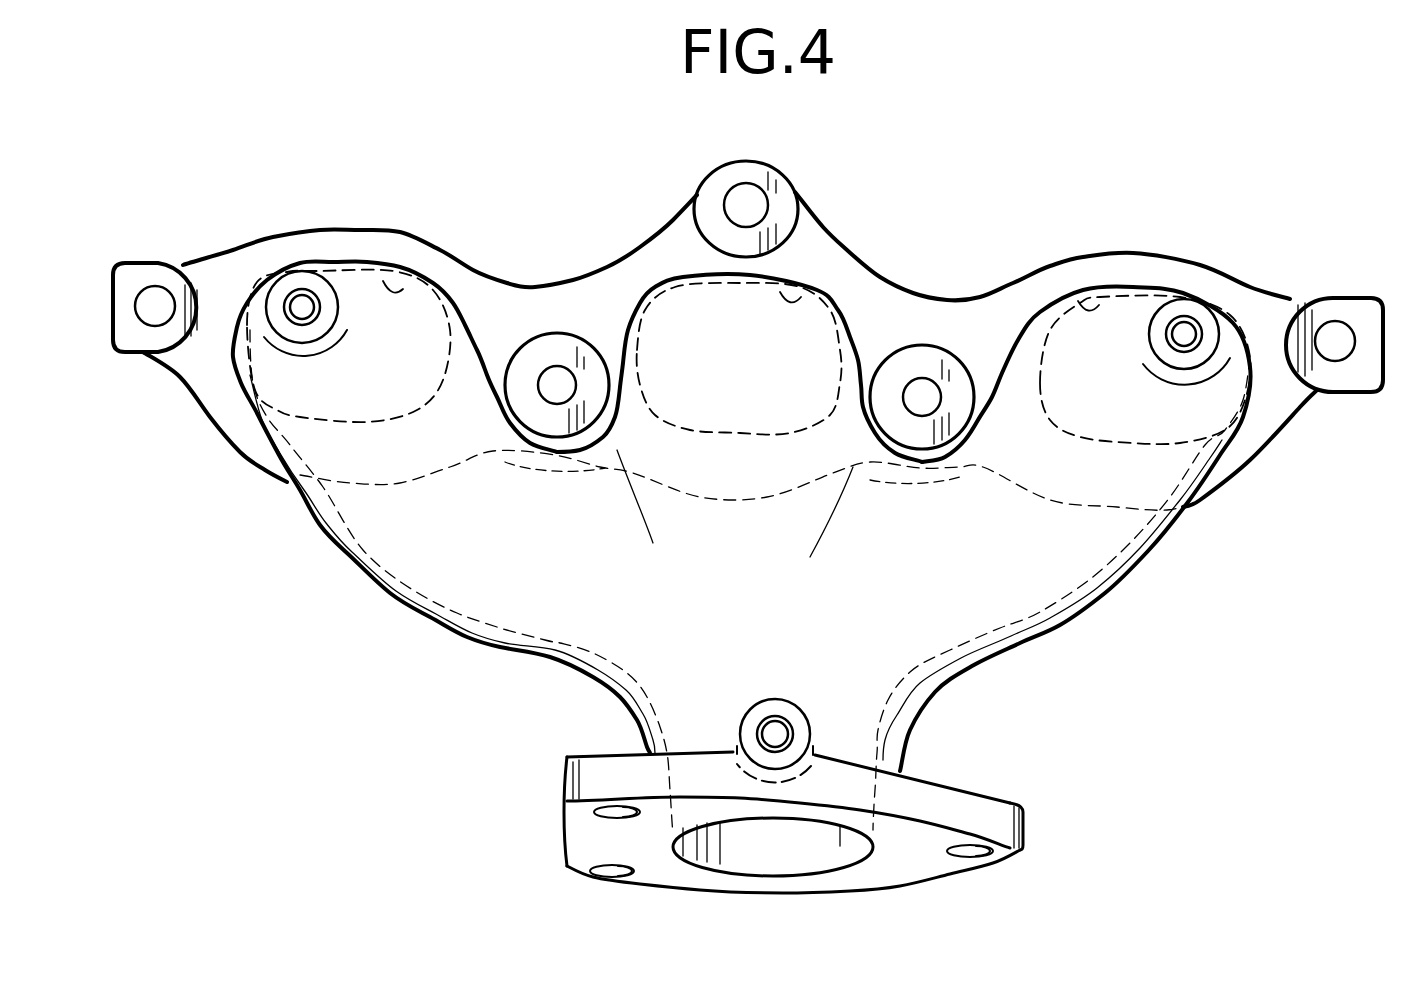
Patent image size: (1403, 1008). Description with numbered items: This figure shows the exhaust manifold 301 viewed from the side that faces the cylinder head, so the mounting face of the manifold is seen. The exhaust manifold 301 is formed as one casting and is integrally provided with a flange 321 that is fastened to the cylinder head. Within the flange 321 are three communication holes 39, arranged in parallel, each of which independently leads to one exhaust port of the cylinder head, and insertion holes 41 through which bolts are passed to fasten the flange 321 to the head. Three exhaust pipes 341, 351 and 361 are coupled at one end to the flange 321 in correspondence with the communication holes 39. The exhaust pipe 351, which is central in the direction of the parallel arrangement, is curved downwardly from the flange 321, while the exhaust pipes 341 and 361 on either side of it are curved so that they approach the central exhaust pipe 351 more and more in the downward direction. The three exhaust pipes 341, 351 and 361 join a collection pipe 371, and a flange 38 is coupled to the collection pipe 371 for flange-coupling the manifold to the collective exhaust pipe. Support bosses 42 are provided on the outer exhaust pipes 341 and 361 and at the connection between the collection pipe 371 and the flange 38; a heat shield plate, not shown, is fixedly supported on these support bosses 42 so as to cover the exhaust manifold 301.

The exhaust manifold 301 is at (1100, 612).
The flange 321 is at (952, 323).
The exhaust pipe 341 is at (1205, 473).
The exhaust pipe 351 is at (622, 350).
The exhaust pipe 361 is at (272, 450).
The collection pipe 371 is at (593, 678).
The flange 38 is at (953, 797).
The communication holes 39 is at (400, 285).
The insertion holes 41 is at (752, 198).
The support bosses 42 is at (298, 300).